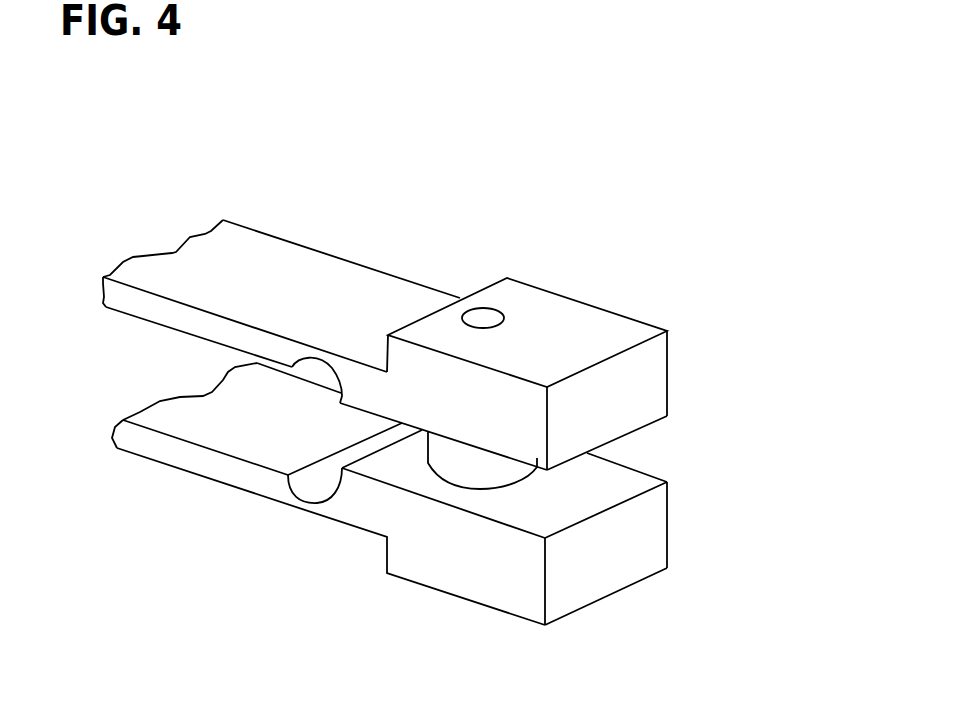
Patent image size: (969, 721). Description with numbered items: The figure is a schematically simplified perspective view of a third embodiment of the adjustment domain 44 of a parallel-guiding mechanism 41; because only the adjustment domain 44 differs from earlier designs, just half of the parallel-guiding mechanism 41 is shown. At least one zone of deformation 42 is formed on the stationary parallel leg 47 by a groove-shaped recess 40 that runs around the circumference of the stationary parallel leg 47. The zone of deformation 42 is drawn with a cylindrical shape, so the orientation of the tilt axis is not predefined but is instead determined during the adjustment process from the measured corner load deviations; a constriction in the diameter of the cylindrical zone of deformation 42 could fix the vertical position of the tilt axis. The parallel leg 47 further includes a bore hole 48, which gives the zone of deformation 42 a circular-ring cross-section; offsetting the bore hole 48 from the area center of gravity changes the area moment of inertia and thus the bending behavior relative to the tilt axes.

The parallel-guiding mechanism 41 is at (112, 218).
The bore hole 48 is at (480, 322).
The zone of deformation 42 is at (458, 465).
The adjustment domain 44 is at (660, 450).
The groove-shaped recess 40 is at (555, 497).
The stationary parallel leg 47 is at (603, 547).